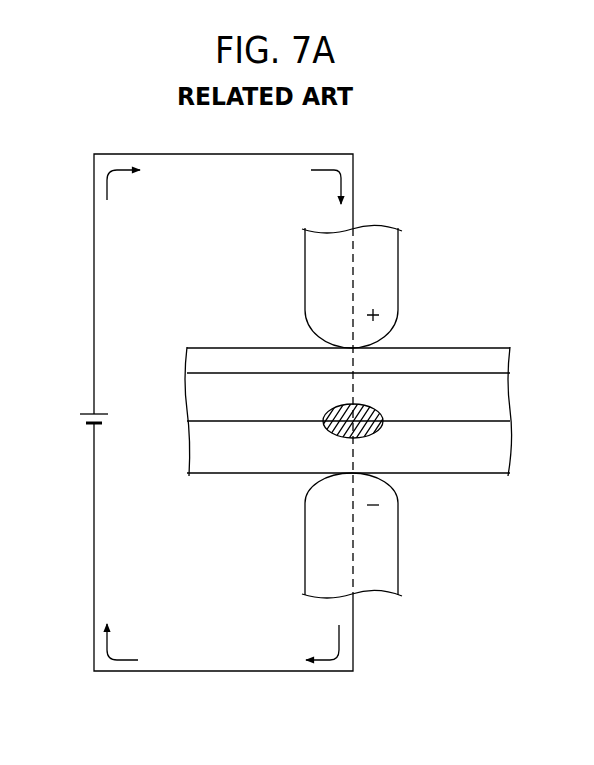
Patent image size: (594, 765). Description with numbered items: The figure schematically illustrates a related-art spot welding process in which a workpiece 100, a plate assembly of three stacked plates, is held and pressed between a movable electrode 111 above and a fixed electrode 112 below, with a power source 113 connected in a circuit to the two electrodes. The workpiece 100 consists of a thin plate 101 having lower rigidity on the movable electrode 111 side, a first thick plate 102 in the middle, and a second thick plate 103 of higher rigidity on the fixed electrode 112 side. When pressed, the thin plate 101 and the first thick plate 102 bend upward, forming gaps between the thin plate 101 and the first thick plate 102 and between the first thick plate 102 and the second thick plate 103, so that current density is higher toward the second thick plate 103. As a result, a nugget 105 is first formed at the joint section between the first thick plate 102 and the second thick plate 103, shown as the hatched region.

The workpiece 100 is at (377, 396).
The thin plate 101 is at (495, 360).
The first thick plate 102 is at (495, 397).
The second thick plate 103 is at (495, 445).
The nugget 105 is at (375, 432).
The movable electrode 111 is at (388, 272).
The fixed electrode 112 is at (390, 558).
The power source 113 is at (88, 413).